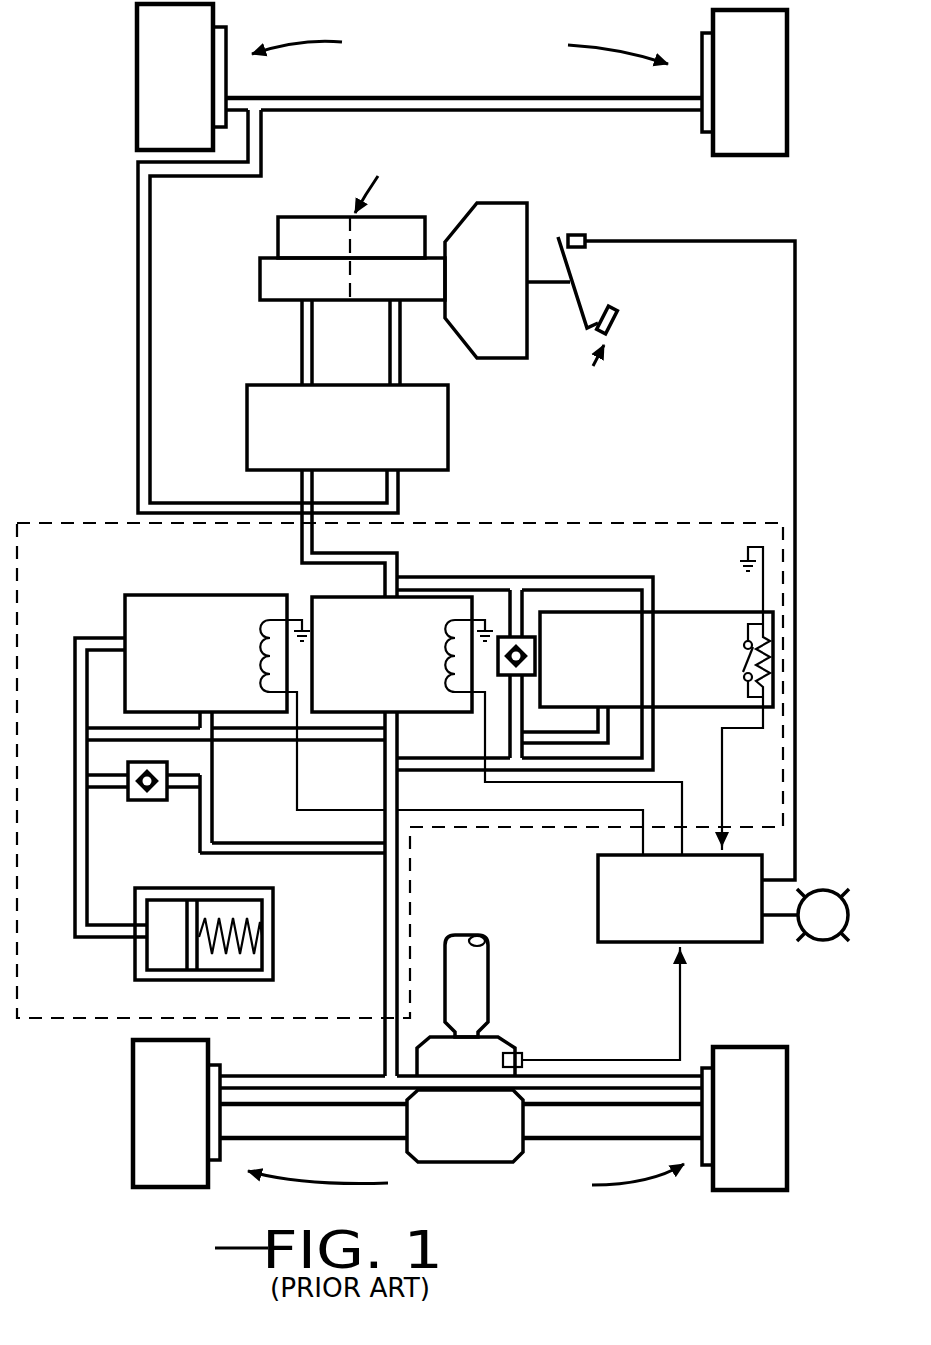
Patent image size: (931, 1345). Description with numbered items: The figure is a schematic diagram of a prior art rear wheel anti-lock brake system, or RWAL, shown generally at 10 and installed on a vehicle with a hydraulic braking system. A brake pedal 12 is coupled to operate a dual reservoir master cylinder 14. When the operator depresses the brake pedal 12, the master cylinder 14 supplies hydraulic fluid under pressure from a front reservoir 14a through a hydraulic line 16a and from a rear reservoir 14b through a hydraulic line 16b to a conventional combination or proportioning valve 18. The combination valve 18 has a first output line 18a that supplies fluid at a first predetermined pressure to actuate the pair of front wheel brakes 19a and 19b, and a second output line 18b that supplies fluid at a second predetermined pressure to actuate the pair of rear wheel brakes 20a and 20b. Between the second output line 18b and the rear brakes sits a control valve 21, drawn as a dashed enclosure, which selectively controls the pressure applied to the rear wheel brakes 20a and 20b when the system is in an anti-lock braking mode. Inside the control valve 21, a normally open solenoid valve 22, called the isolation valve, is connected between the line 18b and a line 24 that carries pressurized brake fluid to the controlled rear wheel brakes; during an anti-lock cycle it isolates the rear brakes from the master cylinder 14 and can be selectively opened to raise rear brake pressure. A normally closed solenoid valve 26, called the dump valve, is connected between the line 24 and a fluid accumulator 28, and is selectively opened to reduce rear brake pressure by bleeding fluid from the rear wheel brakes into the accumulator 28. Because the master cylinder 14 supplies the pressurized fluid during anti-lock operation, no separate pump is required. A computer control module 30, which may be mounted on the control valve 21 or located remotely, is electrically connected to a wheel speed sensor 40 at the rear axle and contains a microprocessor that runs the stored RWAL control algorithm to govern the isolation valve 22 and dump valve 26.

The rear wheel anti-lock brake system (RWAL) 10 is at (110, 1045).
The brake pedal 12 is at (612, 310).
The dual reservoir master cylinder 14 is at (335, 256).
The front reservoir 14a is at (388, 217).
The rear reservoir 14b is at (278, 232).
The hydraulic line 16a is at (400, 371).
The hydraulic line 16b is at (302, 353).
The combination valve 18 is at (450, 432).
The first output line 18a is at (138, 380).
The second output line 18b is at (383, 548).
The front wheel brake 19a is at (226, 85).
The front wheel brake 19b is at (702, 76).
The rear wheel brake 20a is at (220, 1147).
The rear wheel brake 20b is at (700, 1170).
The control valve 21 is at (543, 519).
The isolation valve 22 is at (335, 596).
The line 24 is at (405, 884).
The dump valve 26 is at (172, 595).
The fluid accumulator 28 is at (222, 884).
The computer control module 30 is at (598, 893).
The wheel speed sensor 40 is at (525, 1057).